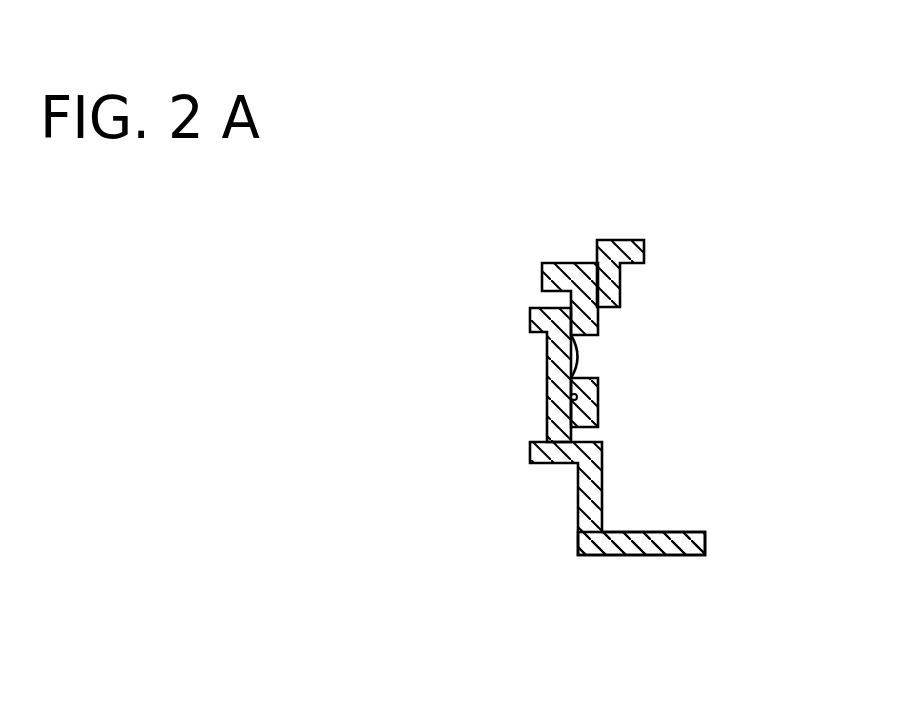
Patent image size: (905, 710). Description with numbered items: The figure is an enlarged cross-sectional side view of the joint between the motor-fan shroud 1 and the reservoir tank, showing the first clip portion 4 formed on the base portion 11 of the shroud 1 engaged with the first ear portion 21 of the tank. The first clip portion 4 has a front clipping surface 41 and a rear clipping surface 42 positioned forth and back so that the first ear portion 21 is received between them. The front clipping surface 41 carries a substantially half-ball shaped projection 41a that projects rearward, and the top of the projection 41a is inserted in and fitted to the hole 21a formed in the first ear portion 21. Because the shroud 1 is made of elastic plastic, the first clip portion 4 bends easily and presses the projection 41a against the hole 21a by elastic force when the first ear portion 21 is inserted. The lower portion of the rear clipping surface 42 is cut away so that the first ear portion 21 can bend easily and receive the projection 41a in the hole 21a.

The motor-fan shroud 1 is at (593, 516).
The base portion 11 is at (661, 540).
The first clip portion 4 is at (582, 291).
The front clipping surface 41 is at (582, 362).
The projection 41a is at (576, 352).
The rear clipping surface 42 is at (595, 247).
The first ear portion 21 is at (620, 282).
The hole 21a is at (580, 382).